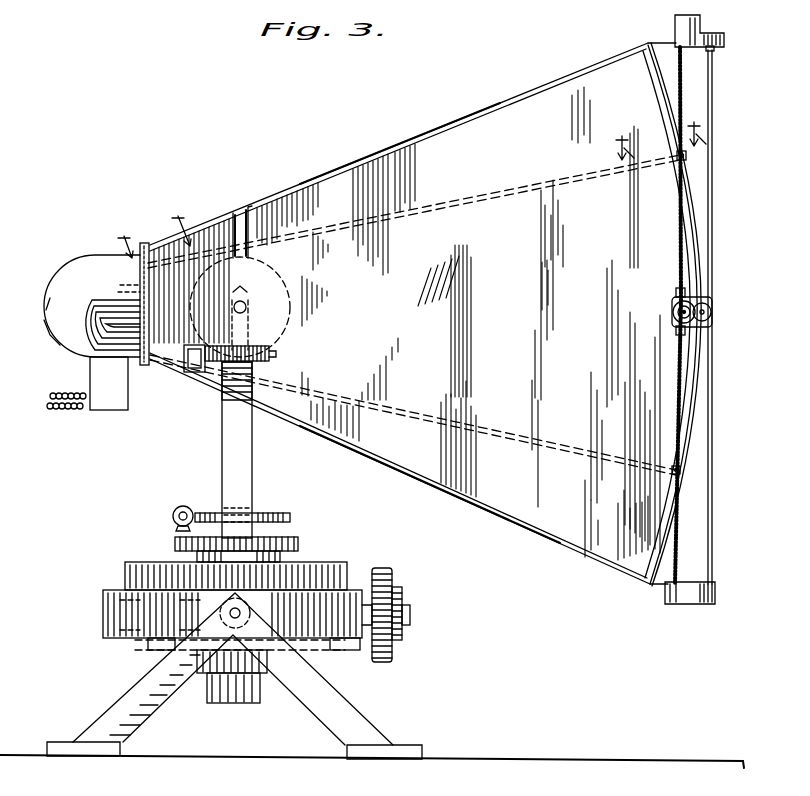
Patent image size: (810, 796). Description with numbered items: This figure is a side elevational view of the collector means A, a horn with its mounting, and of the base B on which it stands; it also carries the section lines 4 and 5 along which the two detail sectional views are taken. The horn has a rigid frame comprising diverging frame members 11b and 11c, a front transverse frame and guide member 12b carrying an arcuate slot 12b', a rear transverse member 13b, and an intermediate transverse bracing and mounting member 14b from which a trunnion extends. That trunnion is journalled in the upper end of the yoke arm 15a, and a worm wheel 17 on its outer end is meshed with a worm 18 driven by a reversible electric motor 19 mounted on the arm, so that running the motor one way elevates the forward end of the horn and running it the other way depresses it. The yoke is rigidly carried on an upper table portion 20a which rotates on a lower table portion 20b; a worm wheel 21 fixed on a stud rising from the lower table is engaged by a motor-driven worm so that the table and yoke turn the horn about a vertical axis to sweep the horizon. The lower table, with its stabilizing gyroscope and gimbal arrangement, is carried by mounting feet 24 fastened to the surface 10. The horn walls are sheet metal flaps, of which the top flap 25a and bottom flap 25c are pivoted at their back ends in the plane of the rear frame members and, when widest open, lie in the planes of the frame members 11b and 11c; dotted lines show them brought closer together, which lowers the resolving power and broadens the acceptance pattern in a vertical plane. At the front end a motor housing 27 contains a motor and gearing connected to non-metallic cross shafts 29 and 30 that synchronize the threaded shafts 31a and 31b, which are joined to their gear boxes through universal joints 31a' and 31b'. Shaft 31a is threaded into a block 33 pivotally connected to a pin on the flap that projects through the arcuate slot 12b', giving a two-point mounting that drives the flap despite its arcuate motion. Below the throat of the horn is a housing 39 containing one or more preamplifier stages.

The collector means A is at (341, 158).
The base B is at (95, 609).
The section line 4- 4 is at (656, 140).
The section line 5- 5 is at (153, 235).
The surface 10 is at (516, 759).
The diverging frame member 11b is at (503, 102).
The diverging frame member 11c is at (518, 528).
The front transverse frame and guide member 12b is at (700, 314).
The arcuate slot 12b' is at (642, 314).
The rear transverse member 13b is at (140, 332).
The intermediate transverse bracing and mounting member 14b is at (241, 223).
The yoke arm 15a is at (254, 467).
The worm wheel 17 is at (262, 348).
The worm 18 is at (230, 366).
The electric motor 19 is at (196, 360).
The upper table portion 20a is at (300, 540).
The lower table portion 20b is at (282, 548).
The worm wheel 21 is at (286, 517).
The mounting feet 24 is at (128, 700).
The top flap 25a is at (527, 182).
The bottom flap 25c is at (478, 434).
The motor 27 is at (675, 23).
The cross shaft 29 is at (714, 108).
The cross shaft 30 is at (712, 310).
The threaded shaft 31a is at (721, 173).
The universal joint 31a' is at (717, 278).
The threaded shaft 31b is at (711, 442).
The universal joint 31b' is at (713, 344).
The block 33 is at (688, 158).
The housing 39 is at (108, 396).